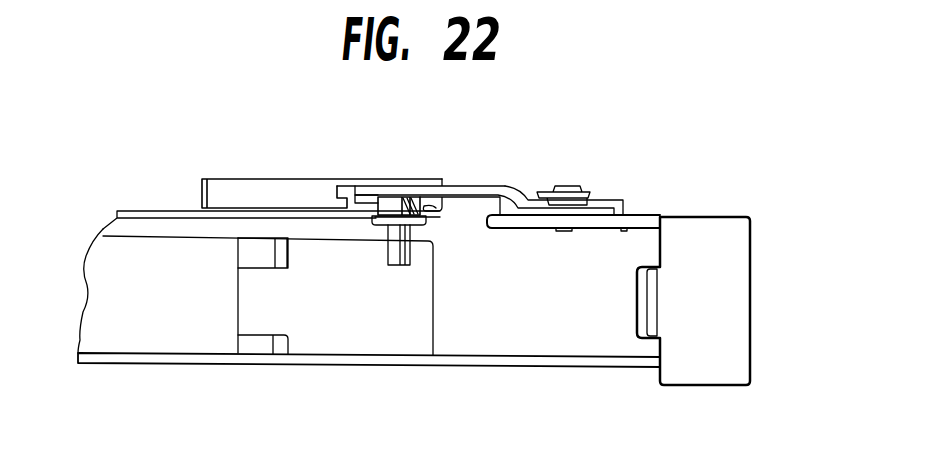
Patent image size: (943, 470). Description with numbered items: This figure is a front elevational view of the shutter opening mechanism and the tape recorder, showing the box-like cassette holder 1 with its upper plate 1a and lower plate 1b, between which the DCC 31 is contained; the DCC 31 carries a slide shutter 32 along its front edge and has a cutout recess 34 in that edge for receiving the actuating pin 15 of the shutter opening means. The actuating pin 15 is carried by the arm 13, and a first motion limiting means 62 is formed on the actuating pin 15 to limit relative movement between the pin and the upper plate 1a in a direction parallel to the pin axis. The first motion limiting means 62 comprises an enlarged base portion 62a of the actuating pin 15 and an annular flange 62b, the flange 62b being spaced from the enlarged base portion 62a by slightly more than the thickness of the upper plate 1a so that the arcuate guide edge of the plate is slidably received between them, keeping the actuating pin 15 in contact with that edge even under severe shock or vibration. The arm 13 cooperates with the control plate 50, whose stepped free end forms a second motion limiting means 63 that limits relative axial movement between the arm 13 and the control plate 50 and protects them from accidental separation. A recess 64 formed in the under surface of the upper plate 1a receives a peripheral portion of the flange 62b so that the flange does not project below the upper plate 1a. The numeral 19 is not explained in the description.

The cassette holder 1 is at (700, 216).
The upper plate 1a is at (147, 212).
The lower plate 1b is at (577, 365).
The arm 13 is at (448, 184).
The actuating pin 15 is at (400, 266).
The fastening nut 19 is at (523, 188).
The DCC 31 is at (308, 343).
The slide shutter 32 is at (163, 345).
The cutout recess 34 is at (257, 247).
The control plate 50 is at (213, 178).
The first motion limiting means 62 is at (410, 197).
The enlarged base portion 62a is at (430, 214).
The annular flange 62b is at (407, 197).
The second motion limiting means 63 is at (343, 178).
The recess 64 is at (380, 230).